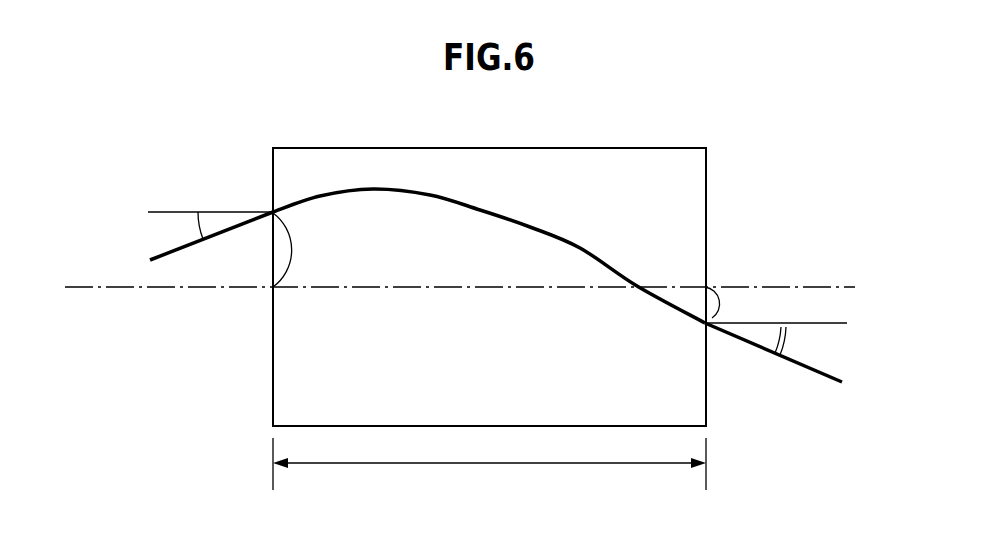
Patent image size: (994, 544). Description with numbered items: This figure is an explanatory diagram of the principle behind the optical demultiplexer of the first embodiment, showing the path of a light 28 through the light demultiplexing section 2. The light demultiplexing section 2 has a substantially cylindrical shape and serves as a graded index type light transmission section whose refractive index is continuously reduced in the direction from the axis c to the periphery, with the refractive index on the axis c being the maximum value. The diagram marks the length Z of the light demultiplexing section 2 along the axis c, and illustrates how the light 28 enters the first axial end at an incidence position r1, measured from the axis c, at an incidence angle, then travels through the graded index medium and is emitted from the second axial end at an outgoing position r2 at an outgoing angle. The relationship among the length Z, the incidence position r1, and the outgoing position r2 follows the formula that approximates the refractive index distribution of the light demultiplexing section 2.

The light demultiplexing section 2 is at (273, 375).
The light 28 is at (373, 189).
The axis c is at (133, 291).
The incidence position r1 is at (302, 250).
The outgoing position r2 is at (729, 305).
The length Z is at (489, 469).